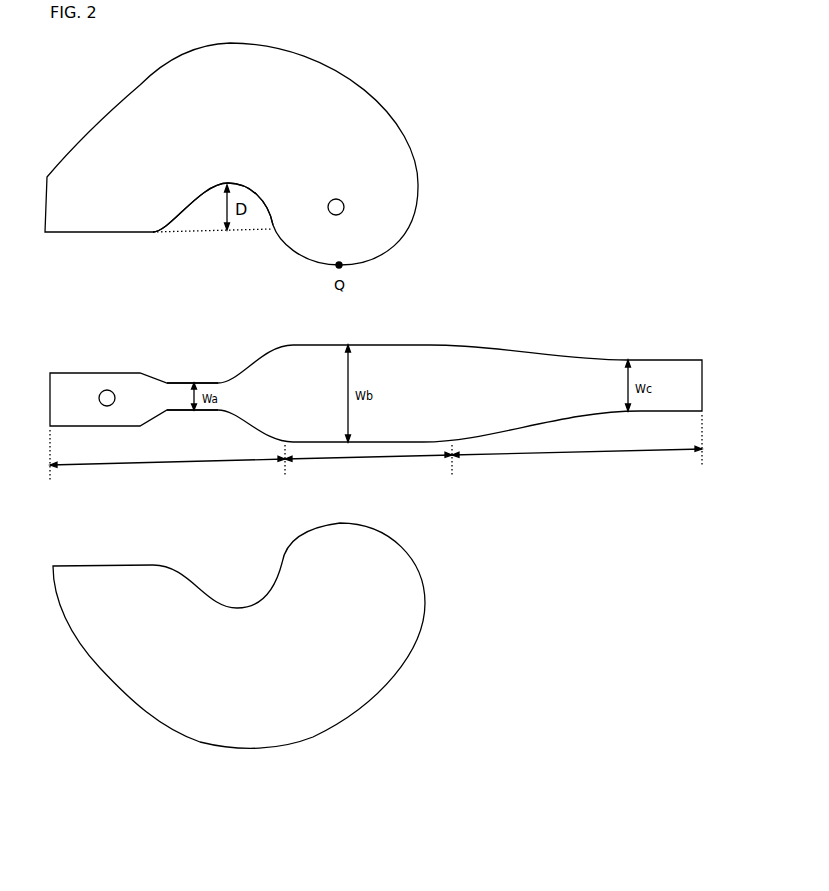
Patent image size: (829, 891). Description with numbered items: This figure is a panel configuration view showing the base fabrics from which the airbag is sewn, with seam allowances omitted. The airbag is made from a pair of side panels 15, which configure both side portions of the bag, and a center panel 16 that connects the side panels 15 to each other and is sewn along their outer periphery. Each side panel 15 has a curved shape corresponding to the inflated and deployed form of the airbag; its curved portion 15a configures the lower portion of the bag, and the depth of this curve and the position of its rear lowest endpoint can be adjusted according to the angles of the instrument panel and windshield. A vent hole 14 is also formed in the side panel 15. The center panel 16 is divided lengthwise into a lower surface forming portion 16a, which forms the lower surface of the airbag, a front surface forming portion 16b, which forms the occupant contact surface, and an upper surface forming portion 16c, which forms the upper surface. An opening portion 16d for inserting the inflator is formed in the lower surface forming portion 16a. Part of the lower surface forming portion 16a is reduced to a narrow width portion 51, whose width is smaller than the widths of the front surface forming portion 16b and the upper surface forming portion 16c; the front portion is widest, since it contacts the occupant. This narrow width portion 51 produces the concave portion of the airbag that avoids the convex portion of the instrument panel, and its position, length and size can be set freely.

The vent hole 14 is at (335, 198).
The side panel 15 is at (240, 131).
The curved portion 15a is at (196, 187).
The center panel 16 is at (482, 401).
The lower surface forming portion 16a is at (167, 460).
The front surface forming portion 16b is at (368, 466).
The upper surface forming portion 16c is at (577, 448).
The opening portion 16d is at (101, 387).
The narrow width portion 51 is at (182, 382).